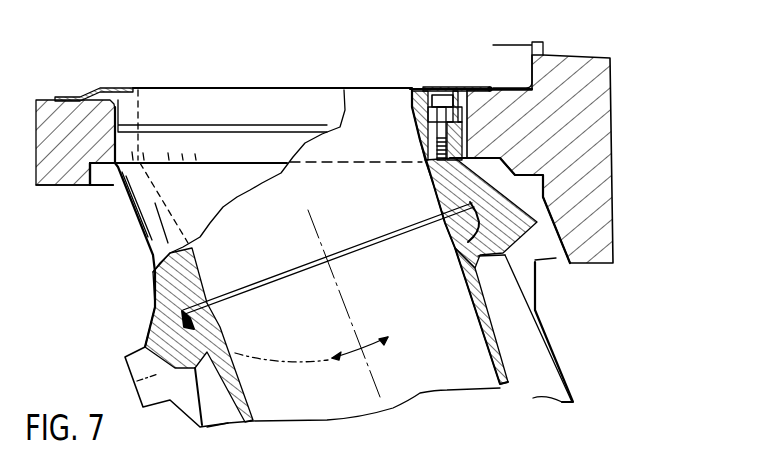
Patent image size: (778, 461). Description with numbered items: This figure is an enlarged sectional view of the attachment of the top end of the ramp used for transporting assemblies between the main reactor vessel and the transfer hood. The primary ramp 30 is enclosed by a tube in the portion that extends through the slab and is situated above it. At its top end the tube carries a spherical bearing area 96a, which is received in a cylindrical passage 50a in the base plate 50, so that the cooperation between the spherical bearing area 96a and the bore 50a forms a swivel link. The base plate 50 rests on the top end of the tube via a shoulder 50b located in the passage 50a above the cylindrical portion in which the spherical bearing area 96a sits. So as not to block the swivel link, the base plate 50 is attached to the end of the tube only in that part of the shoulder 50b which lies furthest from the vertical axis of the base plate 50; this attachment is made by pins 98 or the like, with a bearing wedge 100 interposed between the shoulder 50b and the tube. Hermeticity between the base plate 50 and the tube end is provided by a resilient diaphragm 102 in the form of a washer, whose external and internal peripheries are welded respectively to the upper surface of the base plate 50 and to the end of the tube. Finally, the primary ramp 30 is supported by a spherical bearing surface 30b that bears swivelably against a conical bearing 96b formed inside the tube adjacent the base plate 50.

The primary ramp 30 is at (502, 367).
The spherical bearing surface 30b is at (214, 318).
The base plate 50 is at (47, 98).
The cylindrical passage 50a is at (127, 185).
The shoulder 50b is at (490, 88).
The spherical bearing area 96a is at (243, 132).
The conical bearing 96b is at (470, 229).
The pins 98 is at (413, 97).
The bearing wedge 100 is at (418, 132).
The resilient diaphragm 102 is at (107, 88).